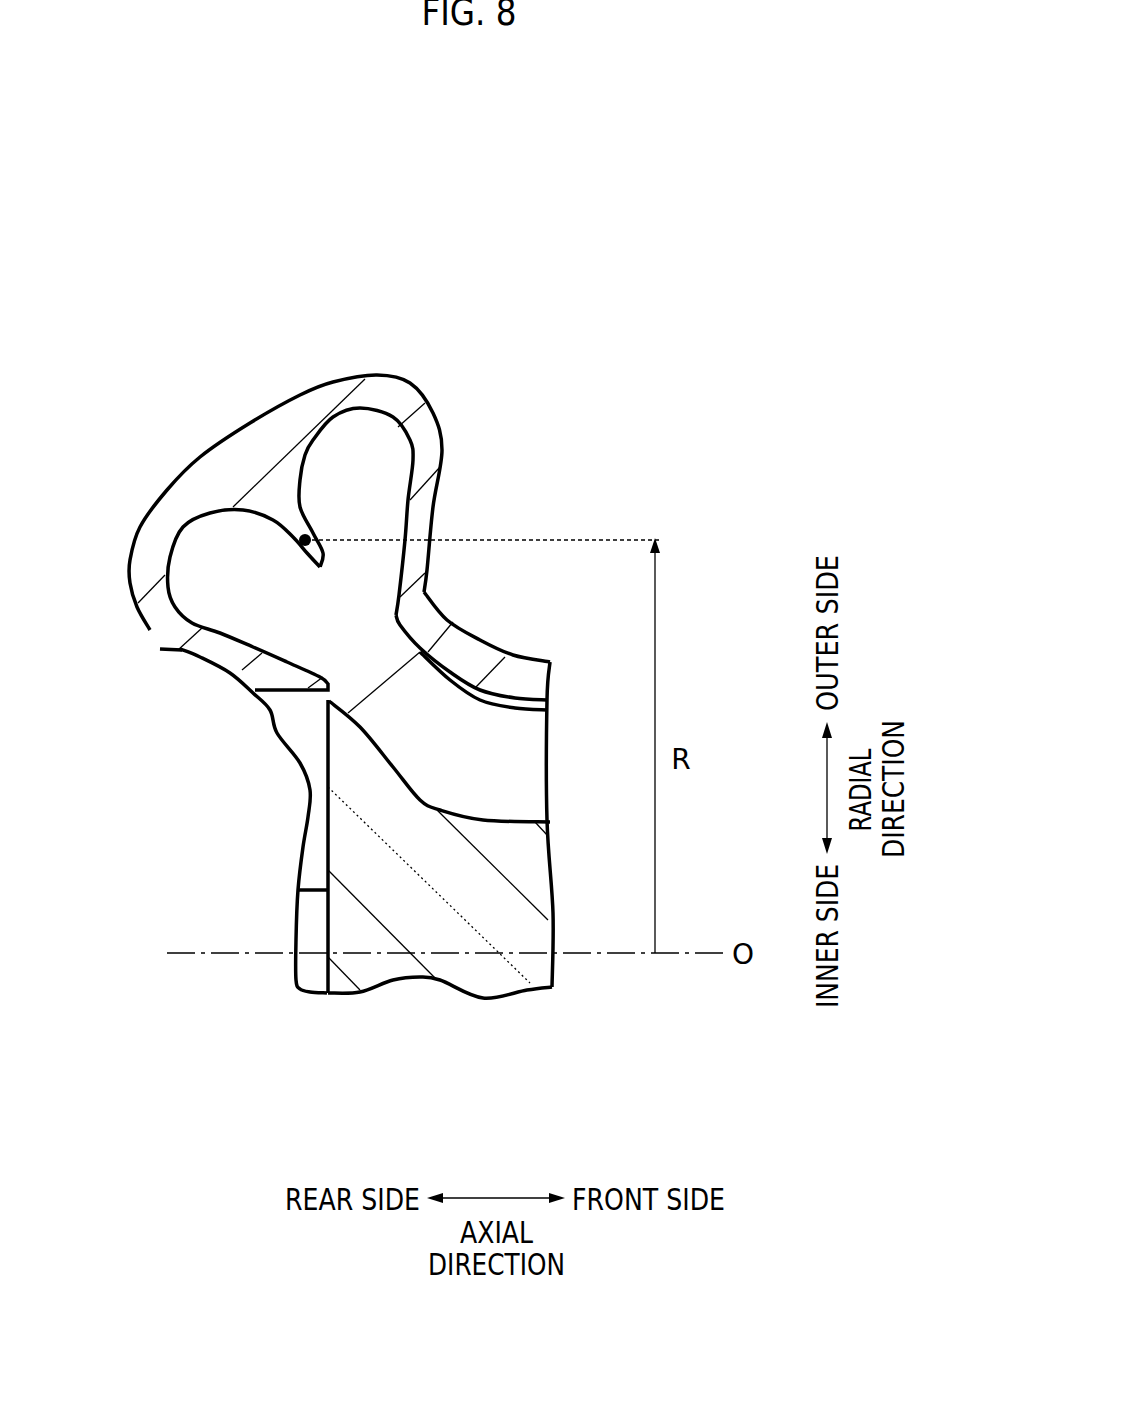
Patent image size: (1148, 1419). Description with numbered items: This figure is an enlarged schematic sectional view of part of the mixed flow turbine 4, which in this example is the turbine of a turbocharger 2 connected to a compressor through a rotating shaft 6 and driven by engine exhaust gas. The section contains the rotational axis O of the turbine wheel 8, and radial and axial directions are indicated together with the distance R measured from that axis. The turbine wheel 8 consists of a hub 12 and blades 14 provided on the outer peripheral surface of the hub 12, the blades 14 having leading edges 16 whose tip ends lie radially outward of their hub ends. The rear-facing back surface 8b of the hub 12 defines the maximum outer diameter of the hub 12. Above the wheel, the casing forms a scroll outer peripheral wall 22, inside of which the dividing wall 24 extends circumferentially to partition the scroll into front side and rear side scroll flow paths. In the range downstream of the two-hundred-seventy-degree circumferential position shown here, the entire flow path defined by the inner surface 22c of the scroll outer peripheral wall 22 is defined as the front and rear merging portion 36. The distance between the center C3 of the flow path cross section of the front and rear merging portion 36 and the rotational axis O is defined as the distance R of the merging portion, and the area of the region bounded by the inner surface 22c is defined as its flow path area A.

The turbocharger 2 is at (652, 300).
The mixed flow turbine 4 is at (549, 355).
The rotating shaft 6 is at (313, 930).
The turbine wheel 8 is at (440, 878).
The hub 12 is at (467, 930).
The back surface 8b is at (327, 820).
The blades 14 is at (498, 733).
The leading edges 16 is at (398, 663).
The scroll outer peripheral wall 22 is at (290, 403).
The inner surface 22c is at (377, 413).
The dividing wall 24 is at (293, 542).
The front and rear merging portion 36 is at (395, 482).
The center of flow path cross section C3 is at (307, 538).
The flow path area A is at (320, 618).